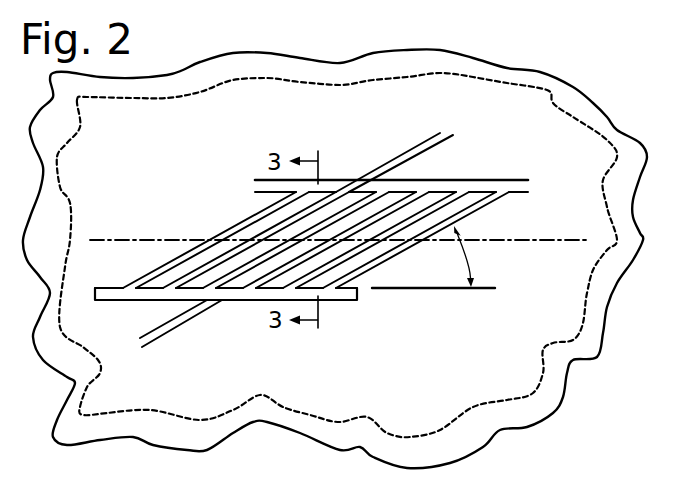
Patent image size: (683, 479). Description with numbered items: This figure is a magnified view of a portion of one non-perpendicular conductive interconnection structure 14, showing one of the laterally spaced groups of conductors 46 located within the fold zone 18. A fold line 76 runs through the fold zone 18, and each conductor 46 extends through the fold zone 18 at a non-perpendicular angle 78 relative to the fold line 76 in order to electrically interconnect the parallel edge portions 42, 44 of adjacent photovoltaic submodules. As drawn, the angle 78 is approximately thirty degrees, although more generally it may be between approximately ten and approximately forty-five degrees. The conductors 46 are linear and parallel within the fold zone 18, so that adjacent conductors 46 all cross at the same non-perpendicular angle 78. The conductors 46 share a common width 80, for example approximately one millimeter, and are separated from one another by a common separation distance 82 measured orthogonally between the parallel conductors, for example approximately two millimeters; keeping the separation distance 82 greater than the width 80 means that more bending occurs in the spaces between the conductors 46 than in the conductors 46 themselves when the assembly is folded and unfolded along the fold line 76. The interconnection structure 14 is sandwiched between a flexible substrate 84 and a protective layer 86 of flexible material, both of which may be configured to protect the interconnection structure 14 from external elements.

The non-perpendicular conductive interconnection structure 14 is at (204, 200).
The fold zone 18 is at (541, 217).
The parallel edge portion 42 is at (481, 180).
The parallel edge portion 44 is at (443, 290).
The conductors 46 is at (256, 213).
The fold line 76 is at (137, 238).
The non-perpendicular angle 78 is at (475, 247).
The width 80 is at (441, 166).
The separation distance 82 is at (127, 316).
The flexible substrate 84 is at (588, 293).
The protective layer 86 is at (566, 403).